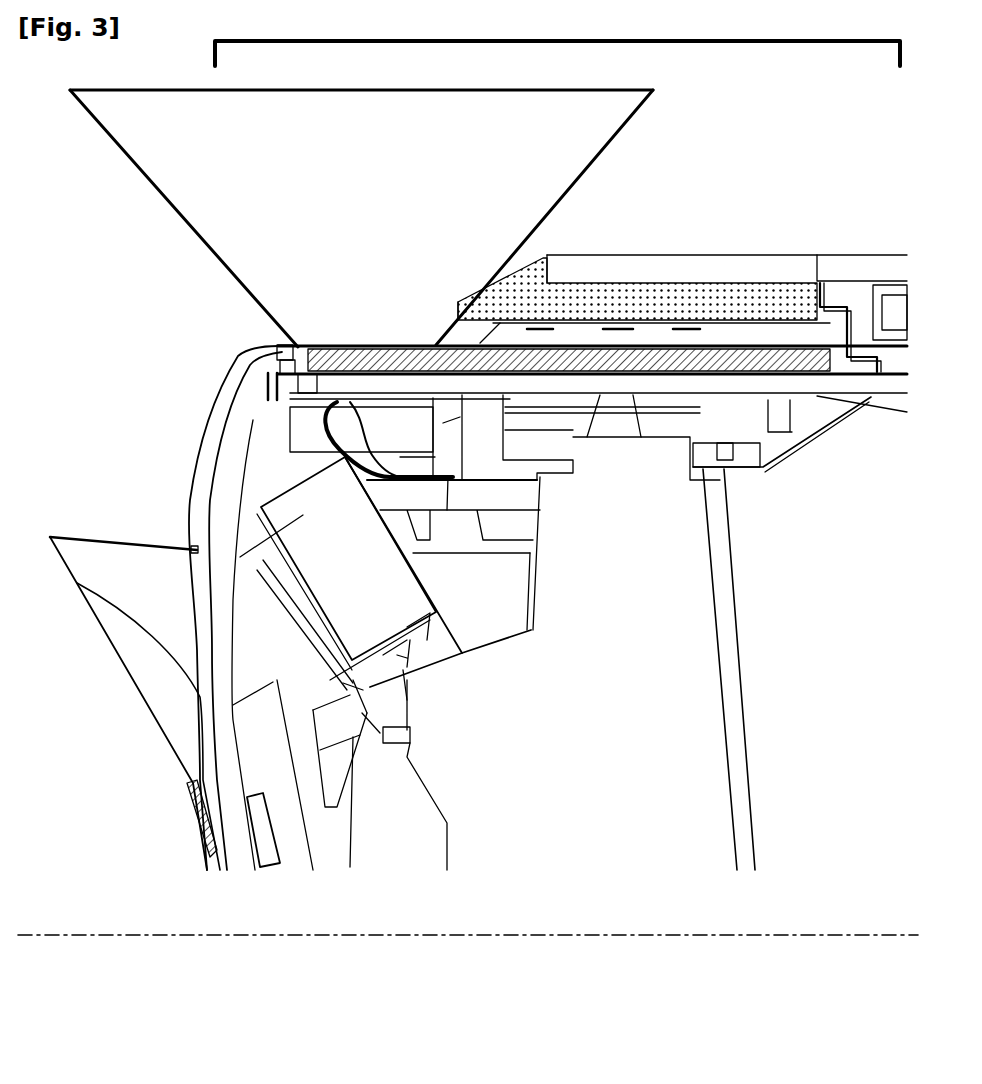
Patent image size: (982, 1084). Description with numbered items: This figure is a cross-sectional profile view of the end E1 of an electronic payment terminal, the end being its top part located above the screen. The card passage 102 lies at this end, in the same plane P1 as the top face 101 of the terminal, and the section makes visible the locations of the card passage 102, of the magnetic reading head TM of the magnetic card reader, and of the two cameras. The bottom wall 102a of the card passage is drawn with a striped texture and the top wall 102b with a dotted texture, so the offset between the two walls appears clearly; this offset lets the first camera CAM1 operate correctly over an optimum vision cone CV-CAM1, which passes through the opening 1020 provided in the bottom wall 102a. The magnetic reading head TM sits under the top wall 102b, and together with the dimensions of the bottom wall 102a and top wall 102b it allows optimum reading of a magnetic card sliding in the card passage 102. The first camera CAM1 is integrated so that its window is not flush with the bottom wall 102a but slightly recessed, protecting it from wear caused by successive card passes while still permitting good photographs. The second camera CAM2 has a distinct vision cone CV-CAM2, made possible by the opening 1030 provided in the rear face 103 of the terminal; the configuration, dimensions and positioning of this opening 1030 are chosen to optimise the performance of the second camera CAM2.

The end E1 is at (557, 39).
The vision cone CV-CAM1 is at (200, 238).
The vision cone CV-CAM2 is at (65, 572).
The first camera CAM1 is at (308, 423).
The second camera CAM2 is at (306, 517).
The magnetic reading head TM is at (617, 321).
The top face 101 is at (720, 254).
The card passage 102 is at (468, 335).
The bottom wall 102a is at (767, 363).
The top wall 102b is at (740, 313).
The opening 1020 is at (360, 347).
The rear face 103 is at (197, 437).
The opening 1030 is at (185, 550).
The plane P1 is at (468, 920).